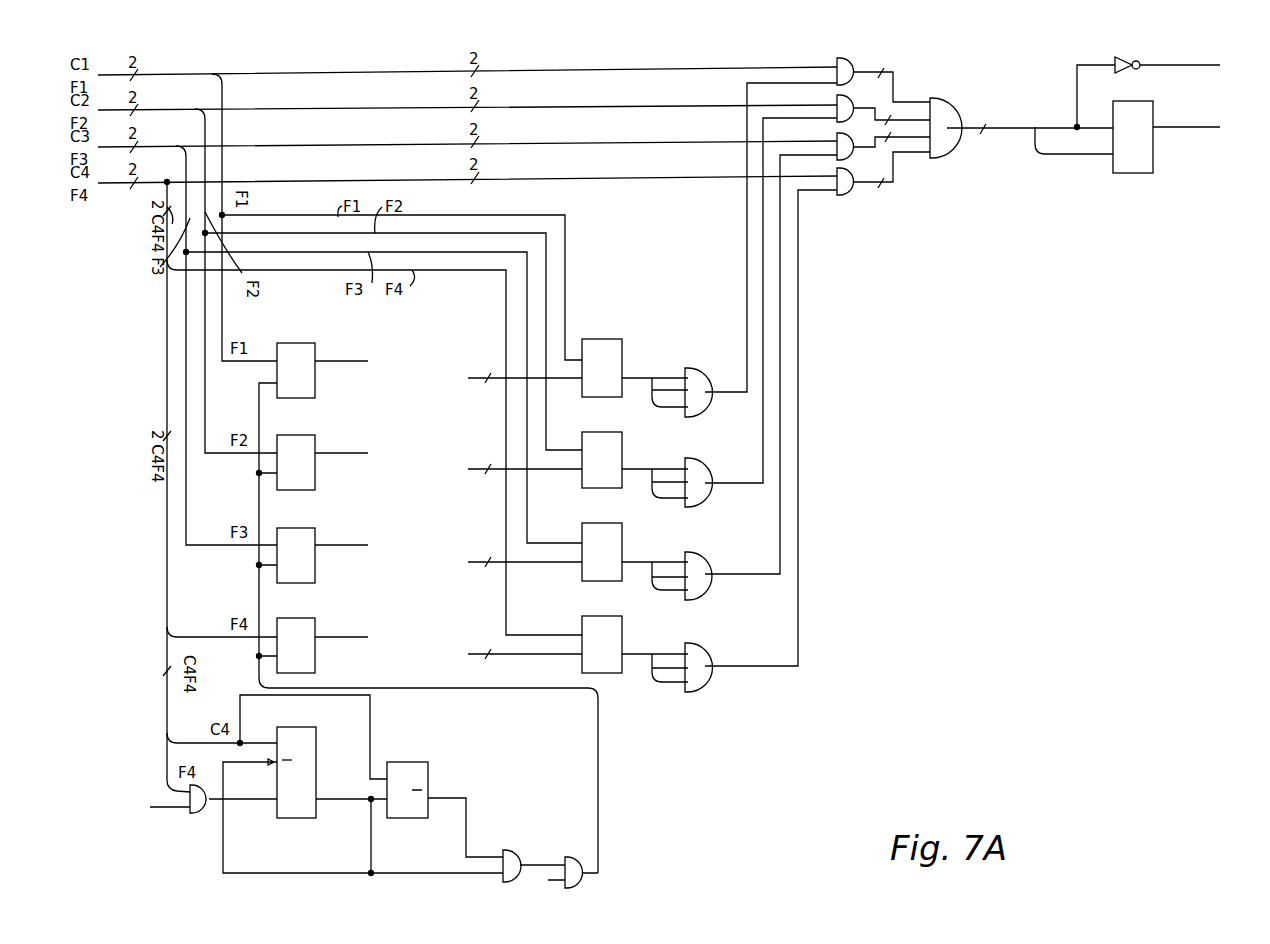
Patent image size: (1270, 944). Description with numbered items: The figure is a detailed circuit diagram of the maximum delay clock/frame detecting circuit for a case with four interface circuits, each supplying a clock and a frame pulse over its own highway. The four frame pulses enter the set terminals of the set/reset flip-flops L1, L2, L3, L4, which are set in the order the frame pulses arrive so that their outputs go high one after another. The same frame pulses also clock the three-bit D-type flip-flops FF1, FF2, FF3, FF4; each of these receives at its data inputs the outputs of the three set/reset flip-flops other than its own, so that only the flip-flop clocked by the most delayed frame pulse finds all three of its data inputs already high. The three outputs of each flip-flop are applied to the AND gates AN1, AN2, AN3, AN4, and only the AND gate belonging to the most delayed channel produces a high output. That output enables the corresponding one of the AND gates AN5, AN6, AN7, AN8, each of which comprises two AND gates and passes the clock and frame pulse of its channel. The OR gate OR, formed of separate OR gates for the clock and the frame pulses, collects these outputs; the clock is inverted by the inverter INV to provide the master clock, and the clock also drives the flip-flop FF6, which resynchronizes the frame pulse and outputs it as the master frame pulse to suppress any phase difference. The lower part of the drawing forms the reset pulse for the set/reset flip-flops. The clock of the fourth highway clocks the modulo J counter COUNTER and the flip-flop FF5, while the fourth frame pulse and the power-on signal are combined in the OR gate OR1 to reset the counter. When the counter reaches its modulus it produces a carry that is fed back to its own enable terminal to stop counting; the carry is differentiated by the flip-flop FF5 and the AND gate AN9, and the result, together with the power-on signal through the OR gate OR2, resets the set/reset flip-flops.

The set/reset flip-flop L1 is at (335, 361).
The set/reset flip-flop L2 is at (335, 453).
The set/reset flip-flop L3 is at (335, 546).
The set/reset flip-flop L4 is at (335, 636).
The flip-flop FF1 is at (534, 362).
The flip-flop FF2 is at (534, 454).
The flip-flop FF3 is at (534, 547).
The flip-flop FF4 is at (534, 640).
The flip-flop FF5 is at (445, 799).
The flip-flop FF6 is at (1140, 126).
The AND gate AN1 is at (694, 368).
The AND gate AN2 is at (698, 465).
The AND gate AN3 is at (700, 561).
The AND gate AN4 is at (701, 653).
The AND gate AN5 is at (837, 63).
The AND gate AN6 is at (837, 100).
The AND gate AN7 is at (837, 137).
The AND gate AN8 is at (837, 174).
The AND gate AN9 is at (508, 850).
The OR gate OR is at (935, 99).
The OR gate OR1 is at (195, 813).
The OR gate OR2 is at (570, 879).
The inverter INV is at (1124, 63).
The modulo J counter COUNTER is at (300, 718).